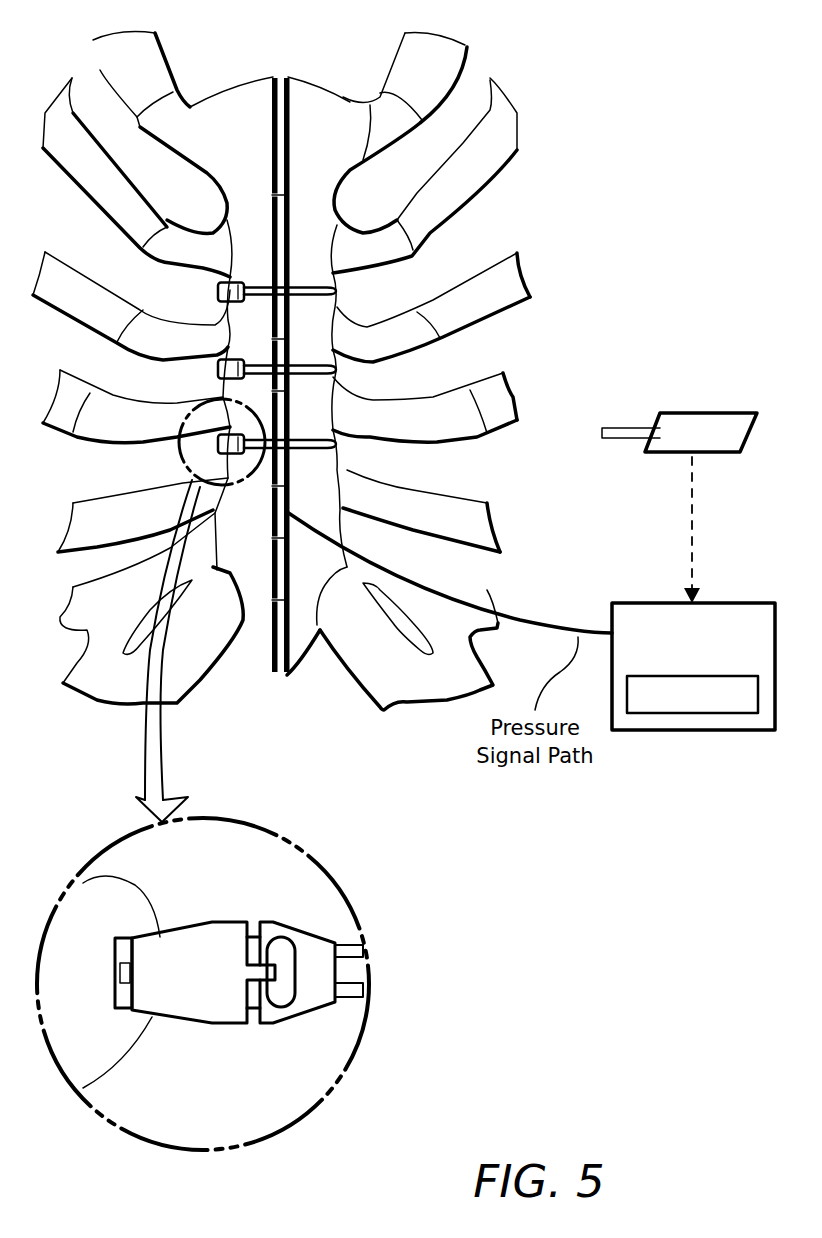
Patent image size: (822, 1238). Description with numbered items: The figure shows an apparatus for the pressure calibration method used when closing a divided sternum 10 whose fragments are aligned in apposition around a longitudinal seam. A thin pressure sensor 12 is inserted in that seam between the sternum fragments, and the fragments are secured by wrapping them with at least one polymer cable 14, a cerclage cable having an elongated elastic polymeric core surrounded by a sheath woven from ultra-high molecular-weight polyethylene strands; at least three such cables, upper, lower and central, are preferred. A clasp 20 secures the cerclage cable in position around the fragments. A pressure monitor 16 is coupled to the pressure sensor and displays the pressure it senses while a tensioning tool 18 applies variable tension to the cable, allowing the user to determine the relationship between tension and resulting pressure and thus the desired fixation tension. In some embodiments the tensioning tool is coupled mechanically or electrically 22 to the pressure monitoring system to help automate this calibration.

The divided sternum 10 is at (300, 670).
The thin pressure sensor 12 is at (273, 217).
The polymer cable 14 is at (300, 287).
The pressure monitor 16 is at (692, 732).
The tensioning tool 18 is at (705, 411).
The clasp 20 is at (183, 453).
The coupling 22 is at (692, 517).